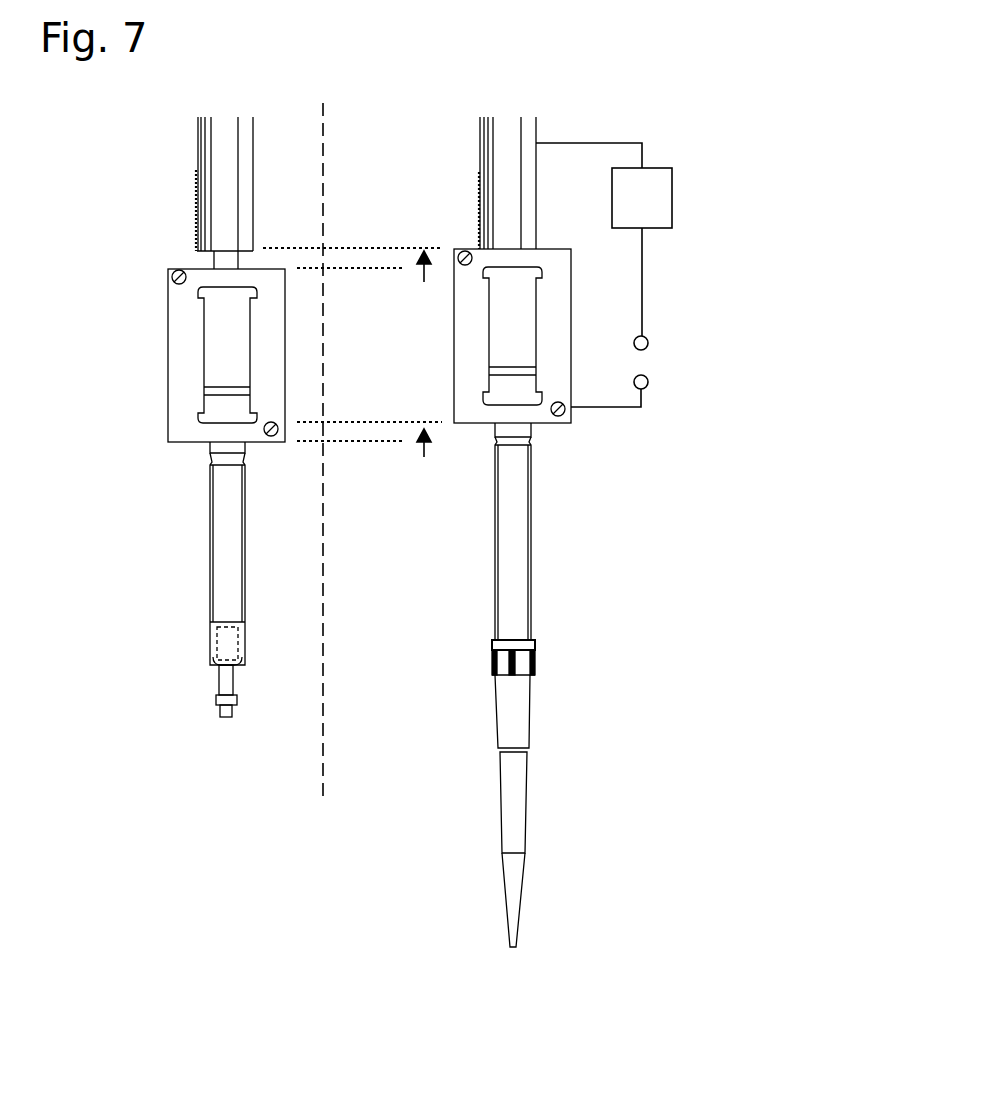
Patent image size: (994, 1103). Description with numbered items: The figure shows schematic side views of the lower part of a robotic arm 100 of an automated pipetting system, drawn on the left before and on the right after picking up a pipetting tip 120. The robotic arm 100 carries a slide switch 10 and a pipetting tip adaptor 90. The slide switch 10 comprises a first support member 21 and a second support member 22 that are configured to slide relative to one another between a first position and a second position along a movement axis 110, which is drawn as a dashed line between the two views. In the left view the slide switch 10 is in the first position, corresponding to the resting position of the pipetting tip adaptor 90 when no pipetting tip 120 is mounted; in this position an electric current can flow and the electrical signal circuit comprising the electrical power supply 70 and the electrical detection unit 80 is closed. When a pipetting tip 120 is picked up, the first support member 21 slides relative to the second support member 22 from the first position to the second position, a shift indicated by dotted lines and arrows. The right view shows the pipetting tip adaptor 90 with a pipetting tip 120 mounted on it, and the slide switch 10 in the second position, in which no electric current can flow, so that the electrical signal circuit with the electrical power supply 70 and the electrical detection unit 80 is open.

The robotic arm 100 is at (92, 128).
The movement axis 110 is at (323, 777).
The second support member 22 is at (220, 238).
The slide switch 10 is at (160, 457).
The first support member 21 is at (210, 313).
The electrical detection unit 80 is at (647, 202).
The electrical power supply 70 is at (657, 360).
The pipetting tip adaptor 90 is at (222, 592).
The pipetting tip 120 is at (518, 795).